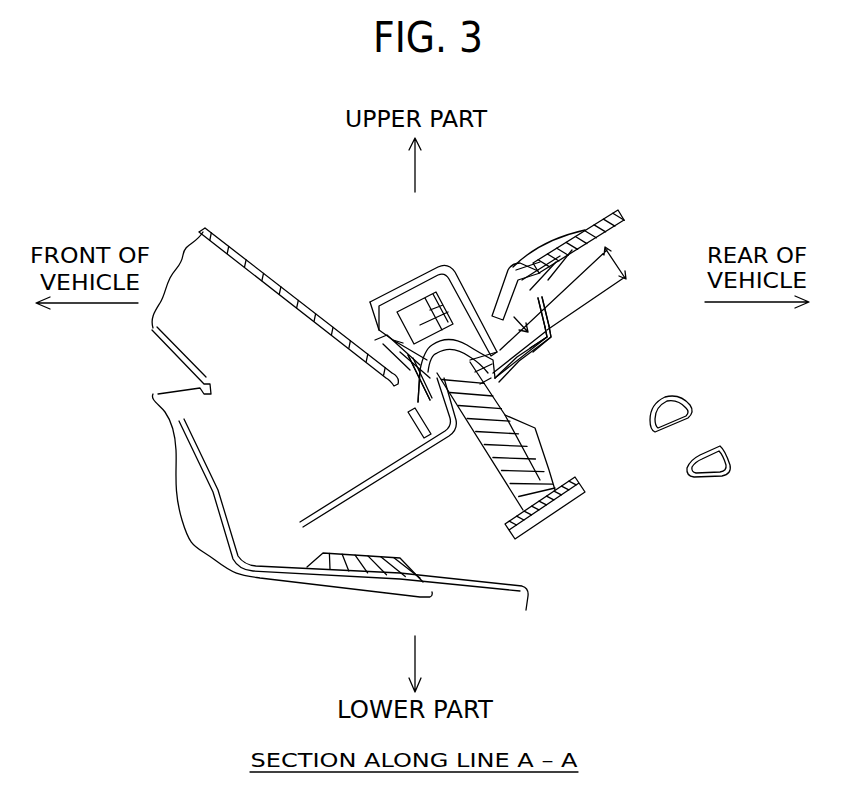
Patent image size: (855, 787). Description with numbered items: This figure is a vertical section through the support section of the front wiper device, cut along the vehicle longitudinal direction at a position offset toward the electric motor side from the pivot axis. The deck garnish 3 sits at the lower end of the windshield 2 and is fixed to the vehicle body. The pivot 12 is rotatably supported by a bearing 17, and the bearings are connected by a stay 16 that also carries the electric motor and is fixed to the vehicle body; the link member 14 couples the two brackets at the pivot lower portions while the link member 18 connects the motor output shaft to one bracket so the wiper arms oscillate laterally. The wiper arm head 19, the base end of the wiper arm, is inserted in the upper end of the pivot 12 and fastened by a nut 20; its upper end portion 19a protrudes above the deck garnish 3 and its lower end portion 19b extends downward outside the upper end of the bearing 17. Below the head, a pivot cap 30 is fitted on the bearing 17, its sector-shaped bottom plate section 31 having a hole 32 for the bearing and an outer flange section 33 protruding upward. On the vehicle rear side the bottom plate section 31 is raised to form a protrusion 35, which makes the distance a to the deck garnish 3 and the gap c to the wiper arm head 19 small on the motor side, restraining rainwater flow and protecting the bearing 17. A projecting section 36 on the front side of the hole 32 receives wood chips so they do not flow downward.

The windshield 2 is at (597, 220).
The deck garnish 3 is at (493, 307).
The pivot 12 is at (407, 286).
The link member 14 is at (680, 395).
The stay 16 is at (570, 511).
The bearing 17 is at (488, 470).
The link member 18 is at (720, 447).
The wiper arm head 19 is at (470, 307).
The upper end portion 19a is at (460, 287).
The lower end portion 19b is at (503, 373).
The nut 20 is at (387, 302).
The pivot cap 30 is at (567, 334).
The bottom plate section 31 is at (353, 483).
The hole 32 is at (524, 398).
The flange section 33 is at (542, 297).
The protrusion 35 is at (548, 331).
The projecting section 36 is at (407, 413).
The distance a is at (565, 296).
The gap c is at (537, 343).